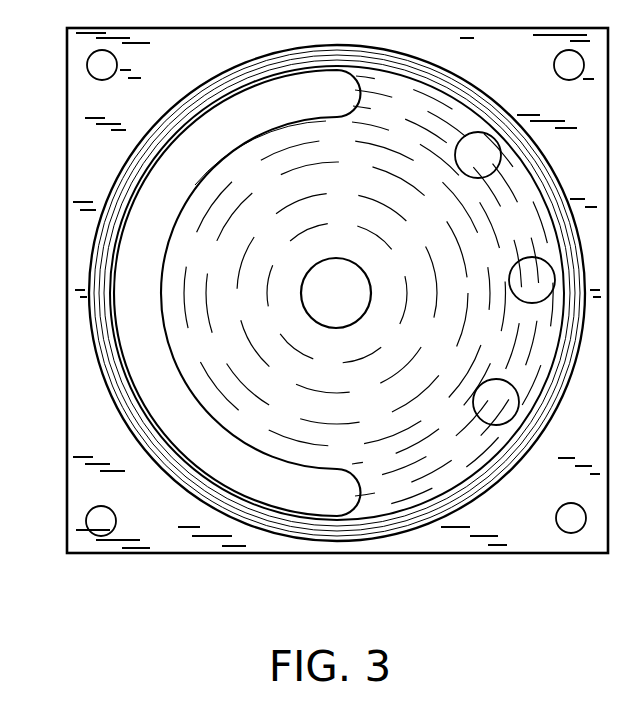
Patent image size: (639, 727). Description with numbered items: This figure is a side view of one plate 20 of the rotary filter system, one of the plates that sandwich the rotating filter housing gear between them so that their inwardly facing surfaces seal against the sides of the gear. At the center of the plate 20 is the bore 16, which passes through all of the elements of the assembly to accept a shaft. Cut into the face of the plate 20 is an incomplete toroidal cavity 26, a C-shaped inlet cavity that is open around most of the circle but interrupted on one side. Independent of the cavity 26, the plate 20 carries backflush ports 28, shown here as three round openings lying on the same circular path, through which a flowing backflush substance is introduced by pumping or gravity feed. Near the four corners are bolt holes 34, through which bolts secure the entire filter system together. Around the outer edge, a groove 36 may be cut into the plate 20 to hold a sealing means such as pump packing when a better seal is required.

The bore 16 is at (336, 297).
The plate 20 is at (368, 293).
The incomplete toroidal cavity 26 is at (236, 293).
The backflush port 28 is at (465, 160).
The bolt hole 34 is at (93, 66).
The groove 36 is at (355, 532).